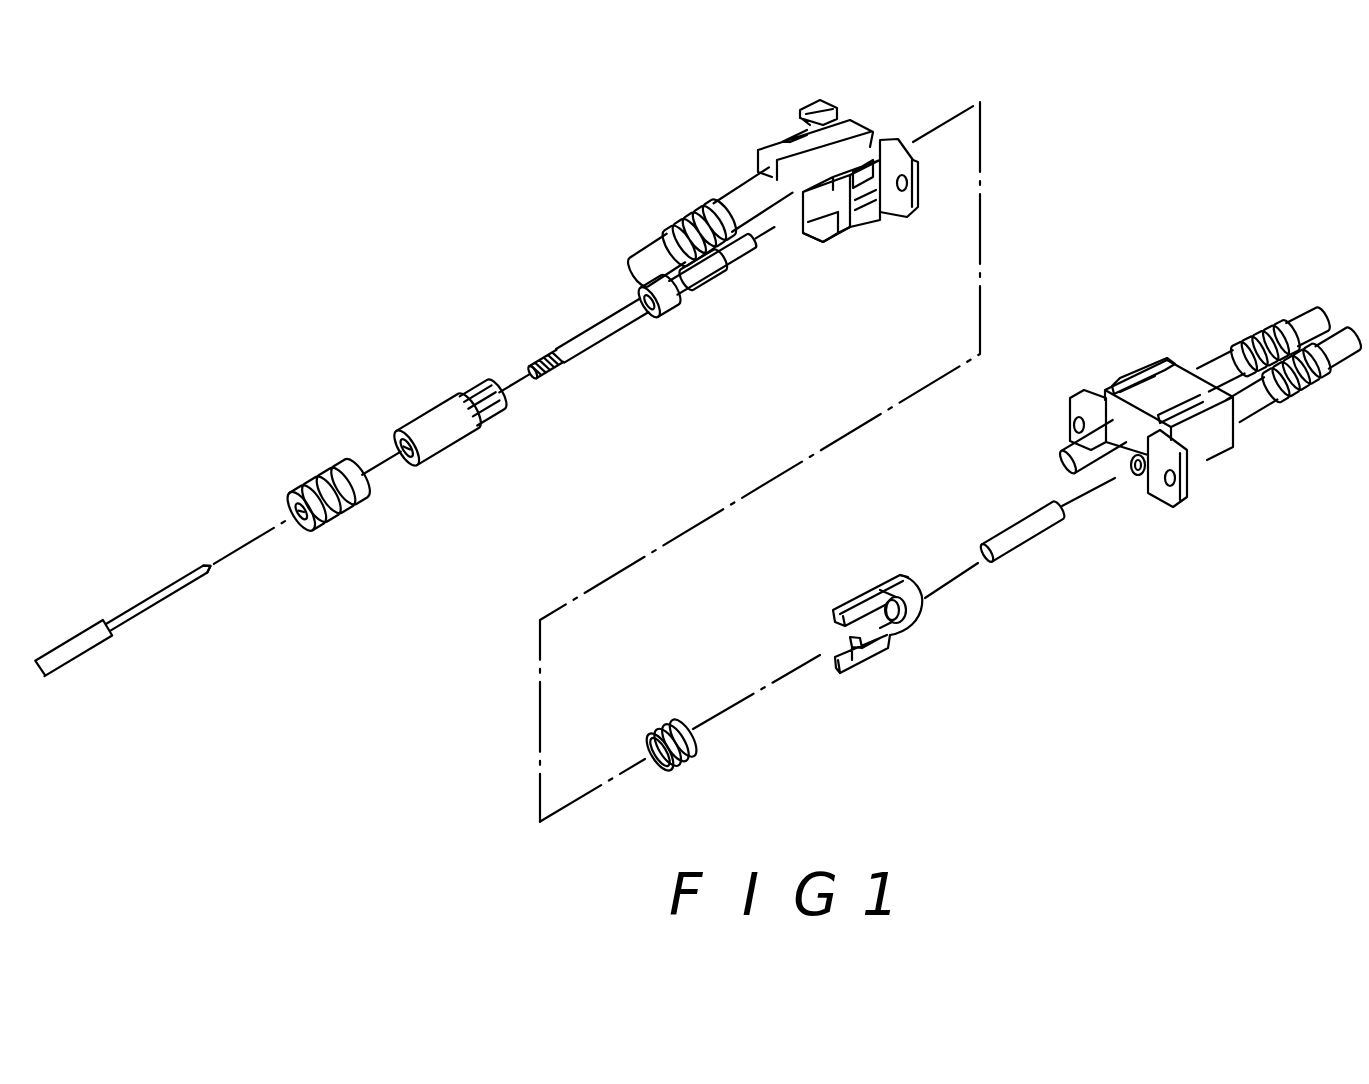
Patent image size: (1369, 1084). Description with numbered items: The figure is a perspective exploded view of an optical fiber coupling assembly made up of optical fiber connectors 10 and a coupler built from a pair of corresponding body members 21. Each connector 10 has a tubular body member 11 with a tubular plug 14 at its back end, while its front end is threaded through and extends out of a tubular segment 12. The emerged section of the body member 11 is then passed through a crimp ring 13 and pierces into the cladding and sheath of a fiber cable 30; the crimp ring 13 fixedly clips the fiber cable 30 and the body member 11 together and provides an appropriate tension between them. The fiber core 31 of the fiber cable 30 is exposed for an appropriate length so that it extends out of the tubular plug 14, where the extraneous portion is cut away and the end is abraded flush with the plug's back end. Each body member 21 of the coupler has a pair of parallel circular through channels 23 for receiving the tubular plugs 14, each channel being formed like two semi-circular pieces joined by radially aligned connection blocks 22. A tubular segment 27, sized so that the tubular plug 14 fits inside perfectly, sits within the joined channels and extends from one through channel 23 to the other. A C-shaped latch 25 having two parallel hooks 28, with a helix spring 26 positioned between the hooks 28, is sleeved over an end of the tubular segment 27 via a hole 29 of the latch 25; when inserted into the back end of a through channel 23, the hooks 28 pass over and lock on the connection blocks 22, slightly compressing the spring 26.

The optical fiber connector 10 is at (705, 190).
The tubular body member 11 is at (600, 330).
The tubular segment 12 is at (437, 420).
The crimp ring 13 is at (323, 480).
The tubular plug 14 is at (690, 279).
The body member 21 is at (1125, 387).
The connection block 22 is at (833, 163).
The through channel 23 is at (830, 233).
The C-shaped latch 25 is at (913, 608).
The helix spring 26 is at (697, 746).
The tubular segment 27 is at (1030, 532).
The hook 28 is at (873, 627).
The hole 29 is at (852, 603).
The fiber cable 30 is at (171, 575).
The fiber core 31 is at (212, 567).